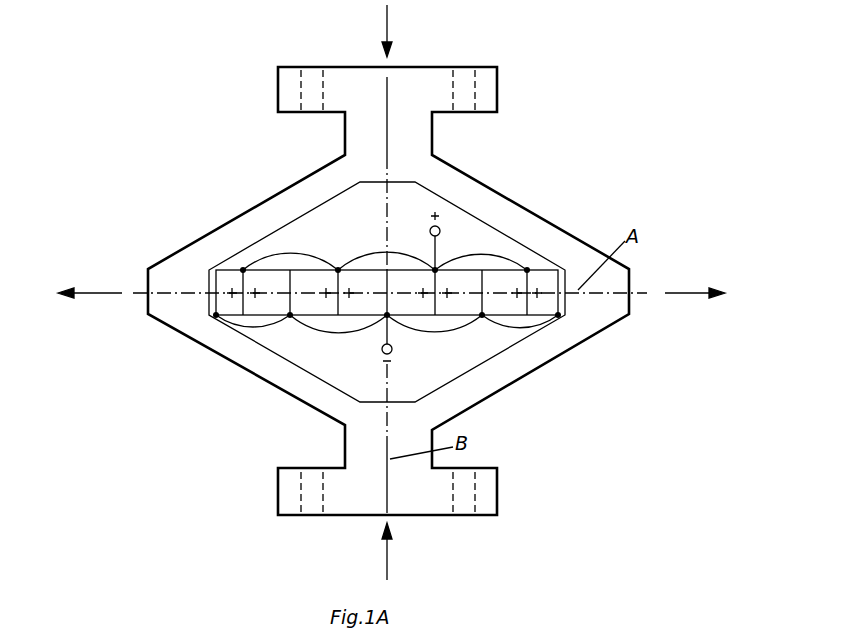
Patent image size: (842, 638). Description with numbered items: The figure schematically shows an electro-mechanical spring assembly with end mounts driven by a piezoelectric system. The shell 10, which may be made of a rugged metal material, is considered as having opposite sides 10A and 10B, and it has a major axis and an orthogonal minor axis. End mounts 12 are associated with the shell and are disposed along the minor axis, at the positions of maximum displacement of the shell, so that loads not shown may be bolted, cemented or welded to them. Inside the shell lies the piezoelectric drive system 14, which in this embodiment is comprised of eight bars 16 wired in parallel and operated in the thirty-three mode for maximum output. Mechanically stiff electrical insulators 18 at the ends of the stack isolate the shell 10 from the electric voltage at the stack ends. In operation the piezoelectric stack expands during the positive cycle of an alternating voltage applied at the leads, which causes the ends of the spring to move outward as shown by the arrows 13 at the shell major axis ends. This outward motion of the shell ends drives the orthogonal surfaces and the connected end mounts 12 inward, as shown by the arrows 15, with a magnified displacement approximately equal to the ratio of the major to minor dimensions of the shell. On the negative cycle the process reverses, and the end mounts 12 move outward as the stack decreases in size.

The shell 10 is at (388, 291).
The side of shell 10A is at (280, 203).
The side of shell 10B is at (273, 377).
The end mounts 12 is at (413, 68).
The arrows 13 is at (110, 290).
The piezoelectric drive system 14 is at (370, 240).
The arrows 15 is at (387, 15).
The bars 16 is at (353, 307).
The electrical insulators 18 is at (210, 306).